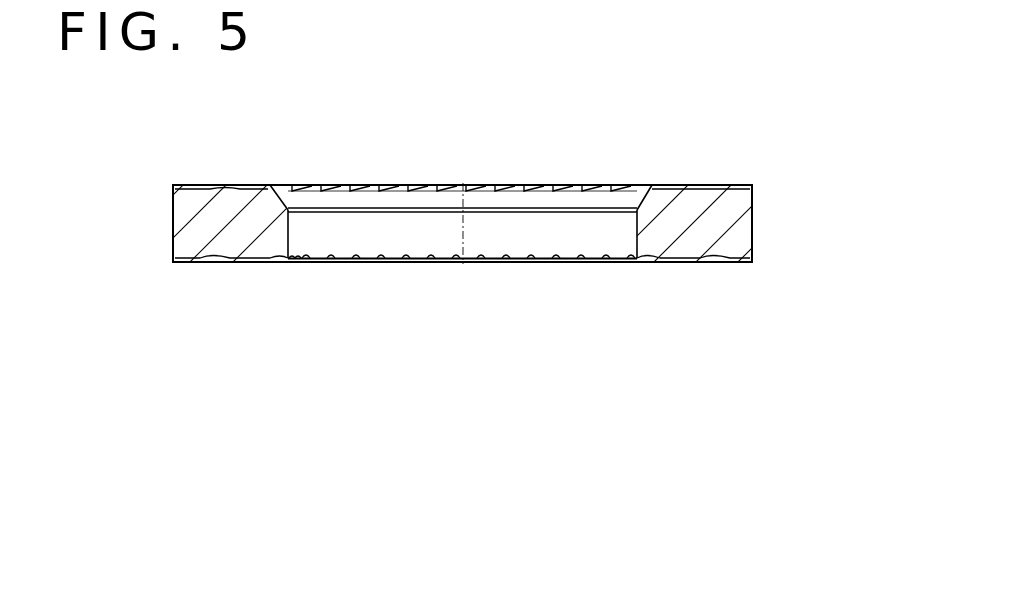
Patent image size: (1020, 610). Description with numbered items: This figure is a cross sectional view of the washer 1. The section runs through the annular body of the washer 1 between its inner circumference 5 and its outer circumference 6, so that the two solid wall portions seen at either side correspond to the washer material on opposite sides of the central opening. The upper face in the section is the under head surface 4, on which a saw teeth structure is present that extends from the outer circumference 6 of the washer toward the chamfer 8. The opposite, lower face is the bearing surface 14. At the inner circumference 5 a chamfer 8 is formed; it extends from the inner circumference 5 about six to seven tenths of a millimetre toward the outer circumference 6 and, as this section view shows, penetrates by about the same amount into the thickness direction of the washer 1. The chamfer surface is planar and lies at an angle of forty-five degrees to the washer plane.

The washer 1 is at (503, 178).
The under head surface 4 is at (462, 120).
The inner circumference 5 is at (289, 236).
The outer circumference 6 is at (172, 218).
The chamfer 8 is at (288, 186).
The bearing surface 14 is at (462, 324).